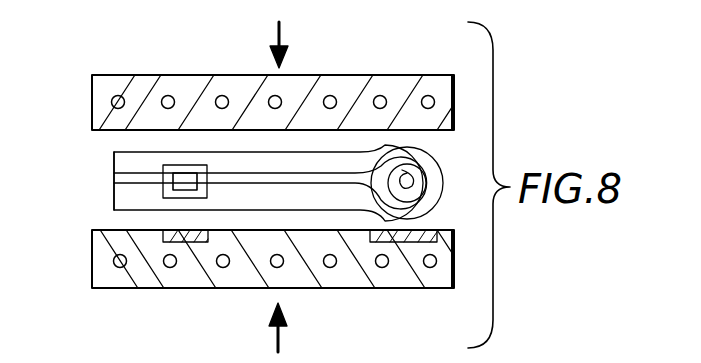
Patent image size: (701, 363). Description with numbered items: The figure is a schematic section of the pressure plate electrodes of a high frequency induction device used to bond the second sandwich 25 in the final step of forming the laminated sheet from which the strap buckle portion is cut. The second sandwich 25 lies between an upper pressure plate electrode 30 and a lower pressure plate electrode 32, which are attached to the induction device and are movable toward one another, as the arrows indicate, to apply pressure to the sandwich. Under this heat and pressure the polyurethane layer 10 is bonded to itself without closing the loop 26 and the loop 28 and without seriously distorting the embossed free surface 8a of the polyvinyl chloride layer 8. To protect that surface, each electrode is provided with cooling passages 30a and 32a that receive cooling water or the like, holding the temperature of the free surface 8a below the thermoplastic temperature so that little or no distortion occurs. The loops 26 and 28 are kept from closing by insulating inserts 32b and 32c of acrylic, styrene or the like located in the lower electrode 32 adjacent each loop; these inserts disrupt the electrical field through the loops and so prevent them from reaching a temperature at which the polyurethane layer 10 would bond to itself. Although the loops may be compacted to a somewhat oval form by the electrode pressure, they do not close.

The polyvinyl chloride layer 8 is at (113, 167).
The embossed free surface 8a is at (114, 152).
The polyurethane layer 10 is at (113, 180).
The second sandwich 25 is at (443, 163).
The loop 26 is at (417, 185).
The loop 28 is at (184, 176).
The pressure plate electrode 30 is at (388, 85).
The cooling passages 30a is at (219, 97).
The pressure plate electrode 32 is at (342, 282).
The cooling passages 32a is at (123, 267).
The insulating insert 32b is at (408, 243).
The insulating insert 32c is at (193, 243).